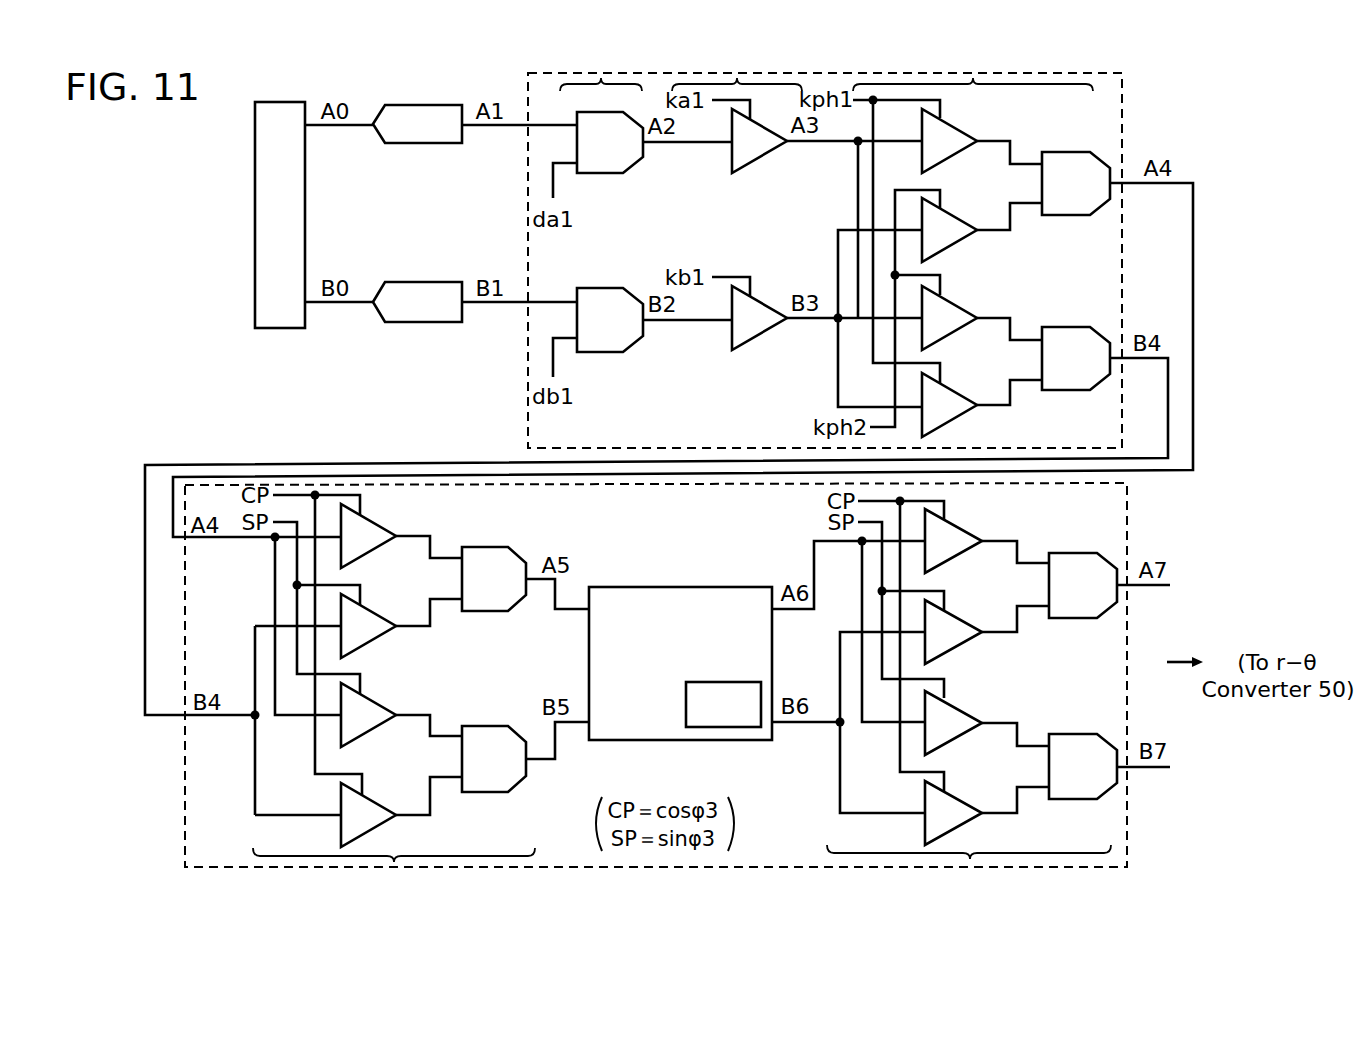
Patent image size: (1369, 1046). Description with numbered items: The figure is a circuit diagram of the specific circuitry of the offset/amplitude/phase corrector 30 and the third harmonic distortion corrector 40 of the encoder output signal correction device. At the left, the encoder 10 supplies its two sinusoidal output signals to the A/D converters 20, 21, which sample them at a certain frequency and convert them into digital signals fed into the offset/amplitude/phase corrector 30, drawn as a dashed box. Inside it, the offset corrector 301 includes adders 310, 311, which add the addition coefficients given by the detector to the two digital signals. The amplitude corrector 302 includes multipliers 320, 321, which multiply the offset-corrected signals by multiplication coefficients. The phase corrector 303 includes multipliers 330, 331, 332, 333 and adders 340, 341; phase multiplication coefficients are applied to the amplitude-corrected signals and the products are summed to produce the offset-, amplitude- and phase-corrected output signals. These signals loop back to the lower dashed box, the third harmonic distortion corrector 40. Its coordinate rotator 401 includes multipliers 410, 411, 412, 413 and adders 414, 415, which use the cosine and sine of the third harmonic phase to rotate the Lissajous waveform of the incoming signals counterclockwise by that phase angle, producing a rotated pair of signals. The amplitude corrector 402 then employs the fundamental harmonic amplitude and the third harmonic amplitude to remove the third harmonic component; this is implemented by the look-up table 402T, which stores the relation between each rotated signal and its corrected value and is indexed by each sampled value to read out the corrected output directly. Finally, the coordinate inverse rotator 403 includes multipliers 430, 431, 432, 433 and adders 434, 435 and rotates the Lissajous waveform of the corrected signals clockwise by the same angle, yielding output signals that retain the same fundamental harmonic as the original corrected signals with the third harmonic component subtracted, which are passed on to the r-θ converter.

The encoder 10 is at (278, 101).
The A/D converter 20 is at (414, 104).
The A/D converter 21 is at (420, 323).
The offset/amplitude/phase corrector 30 is at (1122, 88).
The offset corrector 301 is at (601, 78).
The amplitude corrector 302 is at (737, 78).
The phase corrector 303 is at (973, 78).
The adder 310 is at (611, 175).
The adder 311 is at (598, 286).
The multiplier 320 is at (757, 165).
The multiplier 321 is at (783, 291).
The multiplier 330 is at (955, 128).
The multiplier 331 is at (958, 214).
The multiplier 332 is at (958, 300).
The multiplier 333 is at (958, 388).
The adder 340 is at (1076, 150).
The adder 341 is at (1076, 325).
The third harmonic distortion corrector 40 is at (1127, 812).
The coordinate rotator 401 is at (394, 862).
The amplitude corrector 402 is at (653, 742).
The look-up table 402T is at (744, 729).
The coordinate inverse rotator 403 is at (970, 859).
The multiplier 410 is at (378, 522).
The multiplier 411 is at (378, 612).
The multiplier 412 is at (378, 700).
The multiplier 413 is at (378, 800).
The adder 414 is at (491, 546).
The adder 415 is at (491, 725).
The multiplier 430 is at (962, 528).
The multiplier 431 is at (962, 617).
The multiplier 432 is at (962, 707).
The multiplier 433 is at (962, 798).
The adder 434 is at (1079, 552).
The adder 435 is at (1079, 732).